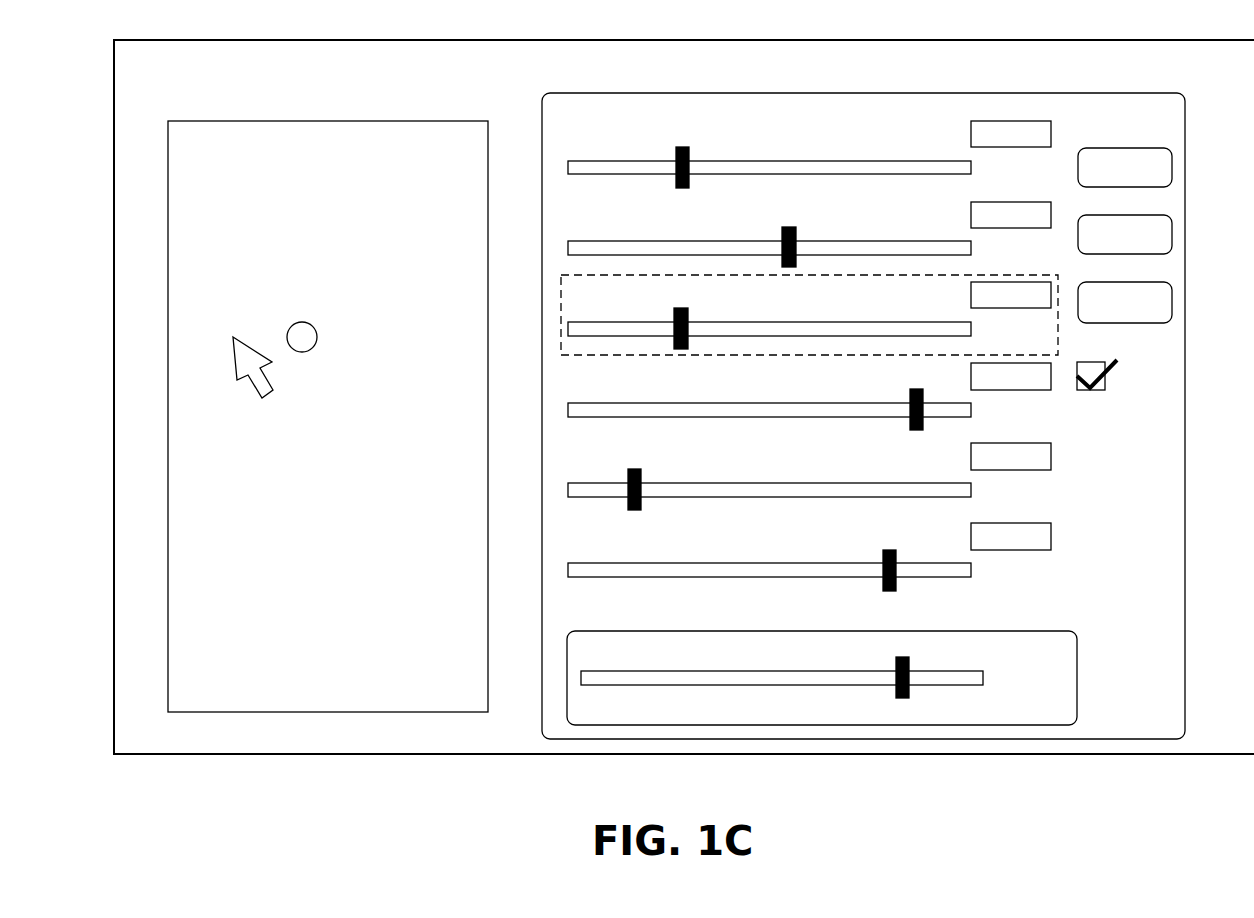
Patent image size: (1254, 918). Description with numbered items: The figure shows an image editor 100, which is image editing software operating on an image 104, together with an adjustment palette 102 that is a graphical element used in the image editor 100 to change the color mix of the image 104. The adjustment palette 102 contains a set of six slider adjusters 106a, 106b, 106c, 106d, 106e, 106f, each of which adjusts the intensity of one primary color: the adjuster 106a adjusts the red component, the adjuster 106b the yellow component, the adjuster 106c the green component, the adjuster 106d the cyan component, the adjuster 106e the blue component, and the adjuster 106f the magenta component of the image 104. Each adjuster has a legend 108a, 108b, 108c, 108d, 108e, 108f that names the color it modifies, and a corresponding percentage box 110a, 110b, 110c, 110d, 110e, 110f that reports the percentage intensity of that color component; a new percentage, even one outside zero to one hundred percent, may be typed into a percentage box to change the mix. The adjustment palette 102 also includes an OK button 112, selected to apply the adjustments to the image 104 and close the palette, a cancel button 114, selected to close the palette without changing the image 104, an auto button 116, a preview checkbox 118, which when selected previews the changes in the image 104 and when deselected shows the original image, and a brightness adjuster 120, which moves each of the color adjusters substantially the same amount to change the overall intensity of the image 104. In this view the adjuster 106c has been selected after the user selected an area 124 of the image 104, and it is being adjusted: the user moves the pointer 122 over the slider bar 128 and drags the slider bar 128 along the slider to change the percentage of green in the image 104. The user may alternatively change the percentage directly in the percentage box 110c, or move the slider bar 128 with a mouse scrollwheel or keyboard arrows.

The image editor 100 is at (264, 26).
The adjustment palette 102 is at (720, 93).
The image 104 is at (338, 121).
The adjuster 106a is at (784, 161).
The adjuster 106b is at (692, 241).
The adjuster 106c is at (828, 322).
The adjuster 106d is at (776, 403).
The adjuster 106e is at (734, 483).
The adjuster 106f is at (734, 563).
The legend 108a is at (1027, 167).
The legend 108b is at (1040, 243).
The legend 108c is at (1034, 323).
The legend 108d is at (1035, 410).
The legend 108e is at (1027, 482).
The legend 108f is at (1055, 570).
The percentage box 110a is at (971, 133).
The percentage box 110b is at (971, 215).
The percentage box 110c is at (971, 294).
The percentage box 110d is at (971, 376).
The percentage box 110e is at (971, 456).
The percentage box 110f is at (971, 536).
The OK button 112 is at (1172, 168).
The cancel button 114 is at (1172, 235).
The auto button 116 is at (1172, 302).
The preview checkbox 118 is at (1105, 390).
The brightness adjuster 120 is at (783, 671).
The pointer 122 is at (240, 338).
The area 124 is at (318, 337).
The slider bar 128 is at (690, 306).